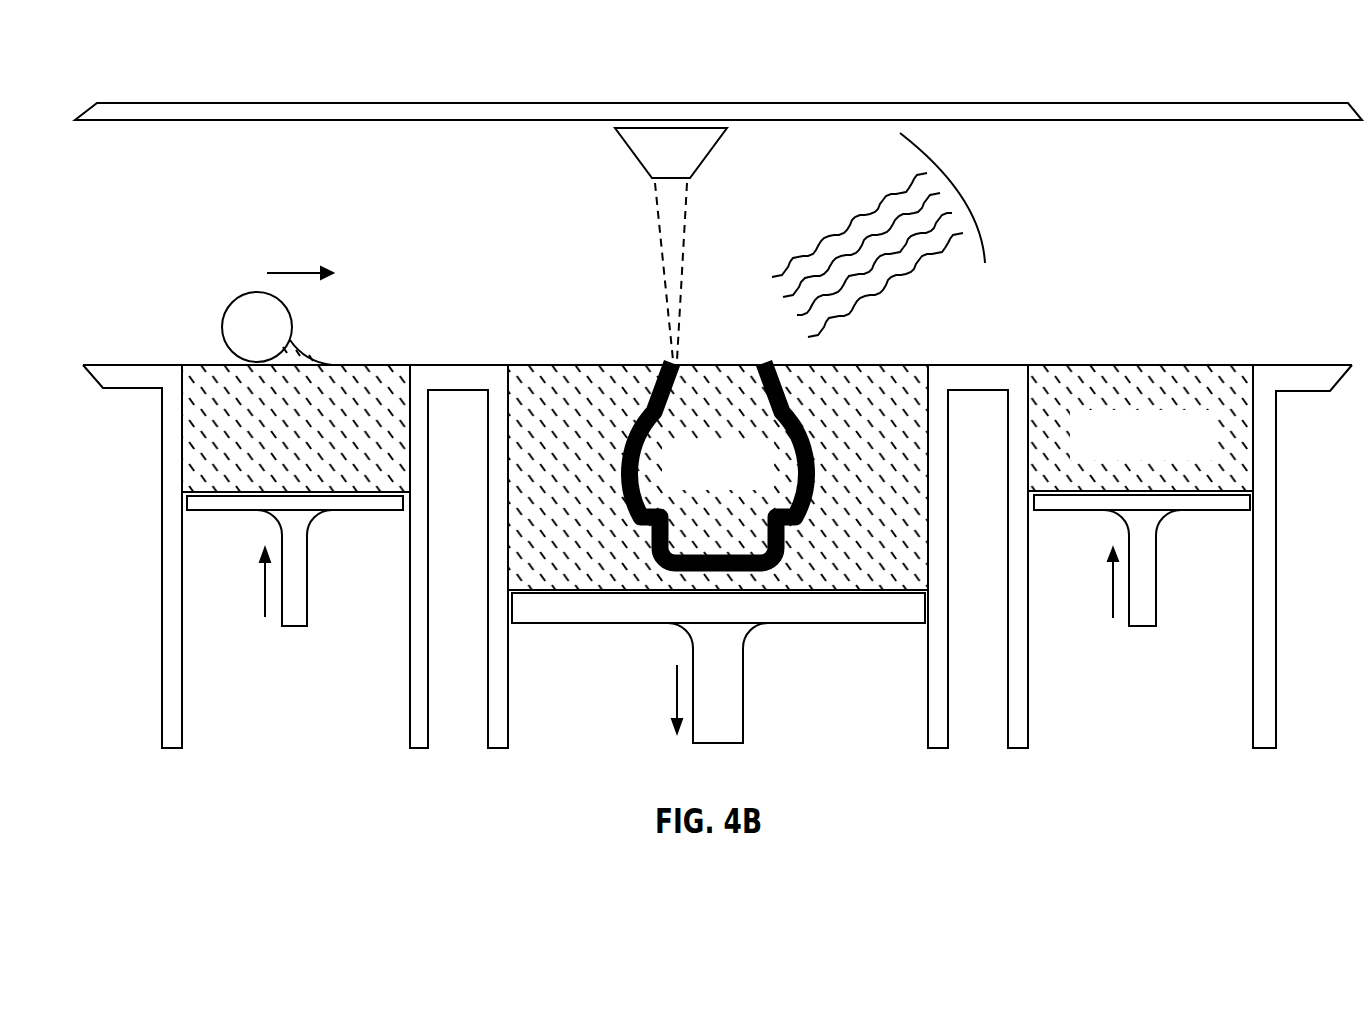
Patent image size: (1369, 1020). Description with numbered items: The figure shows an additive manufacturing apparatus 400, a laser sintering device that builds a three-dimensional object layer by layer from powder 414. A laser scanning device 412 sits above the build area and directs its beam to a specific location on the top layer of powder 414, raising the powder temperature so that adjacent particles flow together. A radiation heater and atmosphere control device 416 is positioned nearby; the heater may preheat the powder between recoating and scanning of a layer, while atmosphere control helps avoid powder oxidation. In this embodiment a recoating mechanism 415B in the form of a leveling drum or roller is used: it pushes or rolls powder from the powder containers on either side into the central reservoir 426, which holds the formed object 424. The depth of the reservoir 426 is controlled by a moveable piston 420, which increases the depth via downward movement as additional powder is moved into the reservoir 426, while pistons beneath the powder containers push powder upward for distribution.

The additive manufacturing apparatus 400 is at (139, 73).
The laser scanning device 412 is at (660, 102).
The powder 414 is at (1242, 337).
The recoating mechanism 415B is at (142, 253).
The radiation heater and/or atmosphere control device 416 is at (1267, 177).
The moveable piston 420 is at (745, 745).
The formed object 424 is at (645, 418).
The reservoir 426 is at (880, 365).